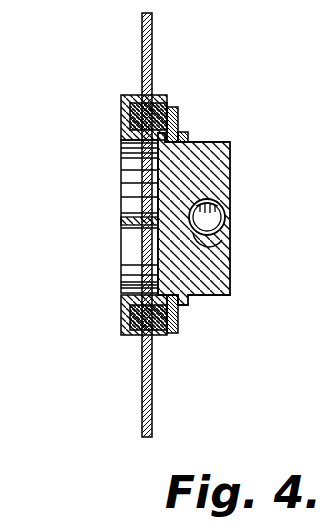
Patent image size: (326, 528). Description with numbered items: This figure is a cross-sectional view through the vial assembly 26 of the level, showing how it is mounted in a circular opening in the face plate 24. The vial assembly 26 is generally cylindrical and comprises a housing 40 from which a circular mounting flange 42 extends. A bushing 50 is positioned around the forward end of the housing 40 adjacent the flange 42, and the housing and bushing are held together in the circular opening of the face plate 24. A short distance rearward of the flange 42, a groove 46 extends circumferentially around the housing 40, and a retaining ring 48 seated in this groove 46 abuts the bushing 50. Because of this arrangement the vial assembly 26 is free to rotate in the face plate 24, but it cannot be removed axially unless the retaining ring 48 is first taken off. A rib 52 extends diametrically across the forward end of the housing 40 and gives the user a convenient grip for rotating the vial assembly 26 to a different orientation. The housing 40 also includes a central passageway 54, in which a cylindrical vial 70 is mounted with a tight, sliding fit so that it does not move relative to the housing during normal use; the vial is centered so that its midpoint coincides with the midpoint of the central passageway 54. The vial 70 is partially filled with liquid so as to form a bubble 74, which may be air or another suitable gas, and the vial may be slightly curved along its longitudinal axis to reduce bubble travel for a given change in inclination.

The face plate 24 is at (152, 57).
The vial assembly 26 is at (120, 175).
The housing 40 is at (222, 153).
The circular mounting flange 42 is at (122, 117).
The groove 46 is at (190, 158).
The retaining ring 48 is at (180, 117).
The bushing 50 is at (158, 112).
The rib 52 is at (122, 222).
The central passageway 54 is at (228, 260).
The cylindrical vial 70 is at (228, 240).
The bubble 74 is at (213, 222).